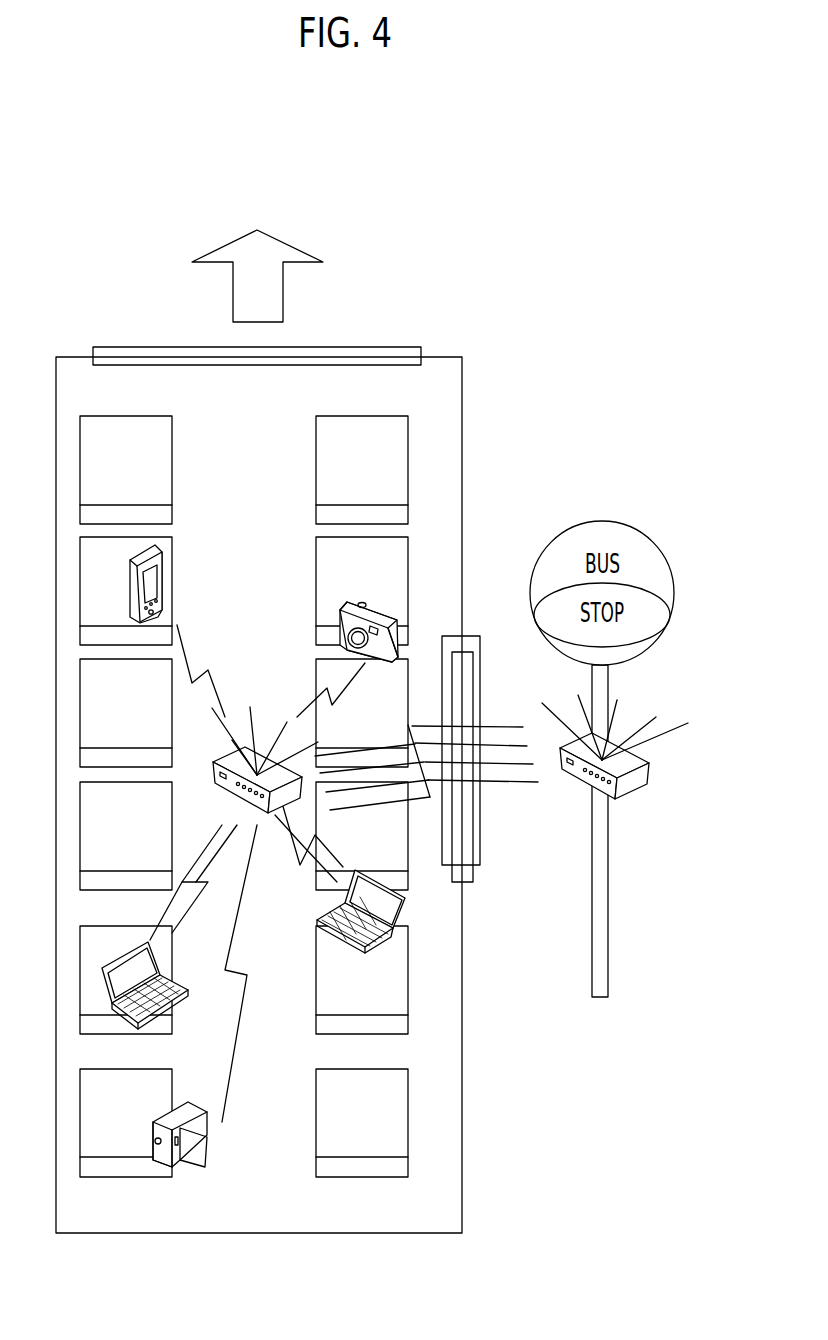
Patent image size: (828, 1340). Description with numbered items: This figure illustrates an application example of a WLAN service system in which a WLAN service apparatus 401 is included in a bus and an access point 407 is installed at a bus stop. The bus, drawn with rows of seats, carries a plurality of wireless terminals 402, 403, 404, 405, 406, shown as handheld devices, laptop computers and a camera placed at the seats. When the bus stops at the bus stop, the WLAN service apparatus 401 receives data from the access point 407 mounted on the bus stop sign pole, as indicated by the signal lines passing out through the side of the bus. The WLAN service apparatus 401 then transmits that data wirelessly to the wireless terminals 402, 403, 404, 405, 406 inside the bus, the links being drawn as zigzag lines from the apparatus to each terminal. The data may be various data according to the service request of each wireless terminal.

The WLAN service apparatus 401 is at (232, 800).
The wireless terminal 402 is at (173, 573).
The wireless terminal 403 is at (158, 958).
The wireless terminal 404 is at (210, 1158).
The wireless terminal 405 is at (365, 873).
The wireless terminal 406 is at (388, 617).
The access point 407 is at (648, 768).